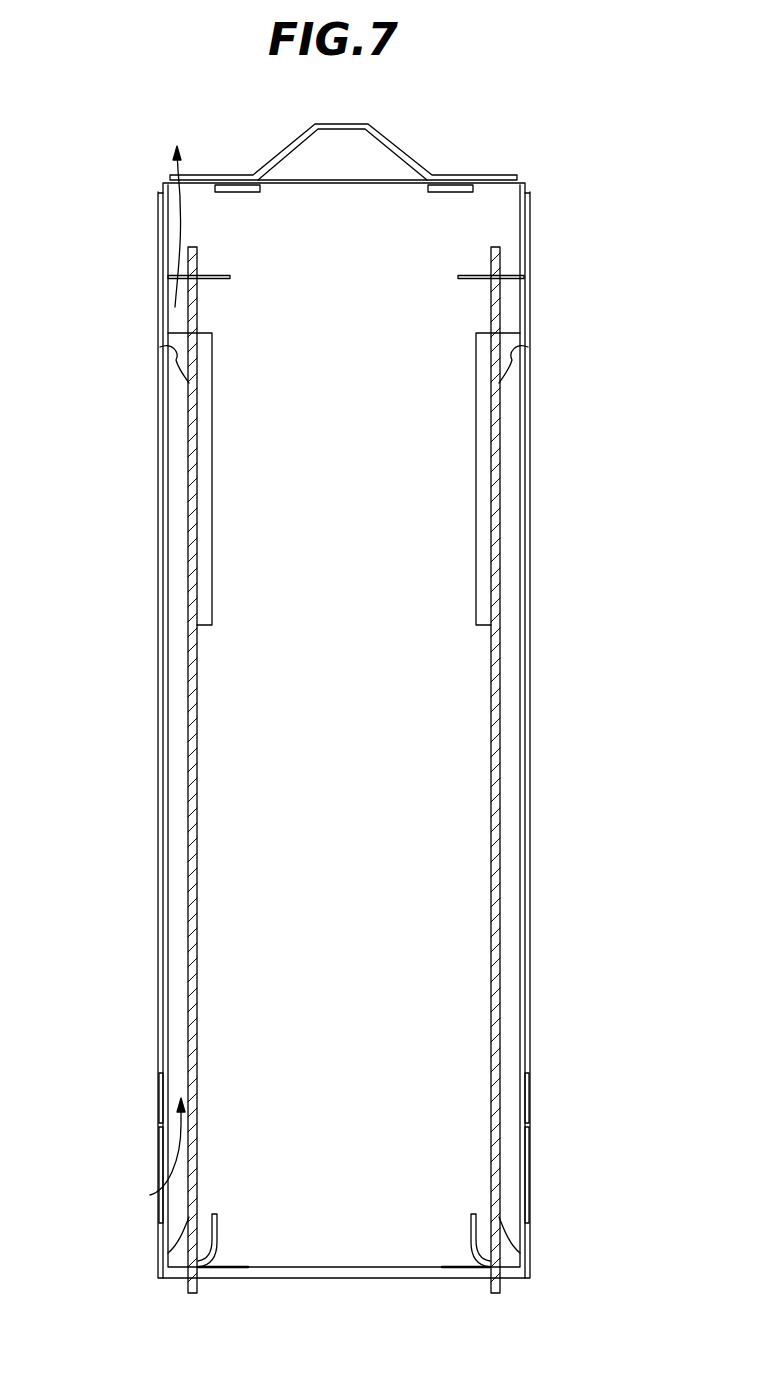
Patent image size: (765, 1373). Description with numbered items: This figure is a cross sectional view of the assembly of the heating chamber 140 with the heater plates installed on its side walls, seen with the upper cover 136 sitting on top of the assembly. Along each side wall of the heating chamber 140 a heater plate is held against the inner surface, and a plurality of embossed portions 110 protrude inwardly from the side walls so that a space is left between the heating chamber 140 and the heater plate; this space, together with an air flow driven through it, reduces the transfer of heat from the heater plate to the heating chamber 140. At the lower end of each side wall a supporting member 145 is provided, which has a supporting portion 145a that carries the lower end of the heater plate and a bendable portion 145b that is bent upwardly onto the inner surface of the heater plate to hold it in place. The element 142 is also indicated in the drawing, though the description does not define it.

The embossed portion 110 is at (160, 347).
The upper cover 136 is at (402, 147).
The heating chamber 140 is at (158, 522).
The insulating plate 142 is at (192, 697).
The supporting member 145 is at (344, 1293).
The supporting portion 145a is at (229, 1268).
The bendable portion 145b is at (217, 1224).